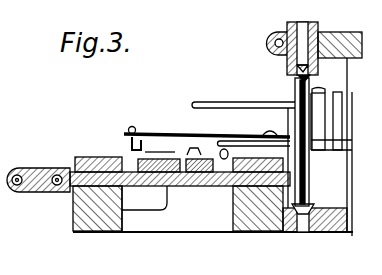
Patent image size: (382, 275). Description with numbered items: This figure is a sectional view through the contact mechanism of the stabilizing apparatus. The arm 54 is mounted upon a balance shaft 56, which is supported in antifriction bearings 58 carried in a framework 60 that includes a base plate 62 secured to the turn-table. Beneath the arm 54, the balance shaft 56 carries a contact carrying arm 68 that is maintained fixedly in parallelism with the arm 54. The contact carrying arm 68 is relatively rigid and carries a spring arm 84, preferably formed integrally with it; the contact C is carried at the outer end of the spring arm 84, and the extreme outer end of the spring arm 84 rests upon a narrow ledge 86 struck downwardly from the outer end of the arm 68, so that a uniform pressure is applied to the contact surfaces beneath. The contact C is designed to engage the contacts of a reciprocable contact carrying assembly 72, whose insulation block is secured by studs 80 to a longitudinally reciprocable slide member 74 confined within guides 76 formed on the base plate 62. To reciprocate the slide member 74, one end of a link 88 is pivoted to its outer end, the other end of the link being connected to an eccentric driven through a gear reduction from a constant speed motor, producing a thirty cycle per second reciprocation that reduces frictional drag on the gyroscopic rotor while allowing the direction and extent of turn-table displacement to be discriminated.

The arm 54 is at (233, 104).
The balance shaft 56 is at (286, 230).
The antifriction bearings 58 is at (330, 236).
The framework 60 is at (158, 222).
The base plate 62 is at (140, 226).
The contact carrying arm 68 is at (180, 134).
The reciprocable contact carrying assembly 72 is at (183, 163).
The slide member 74 is at (86, 165).
The guides 76 is at (128, 129).
The studs 80 is at (203, 158).
The spring arm 84 is at (222, 141).
The ledge 86 is at (140, 133).
The link 88 is at (27, 166).
The contact c is at (163, 150).